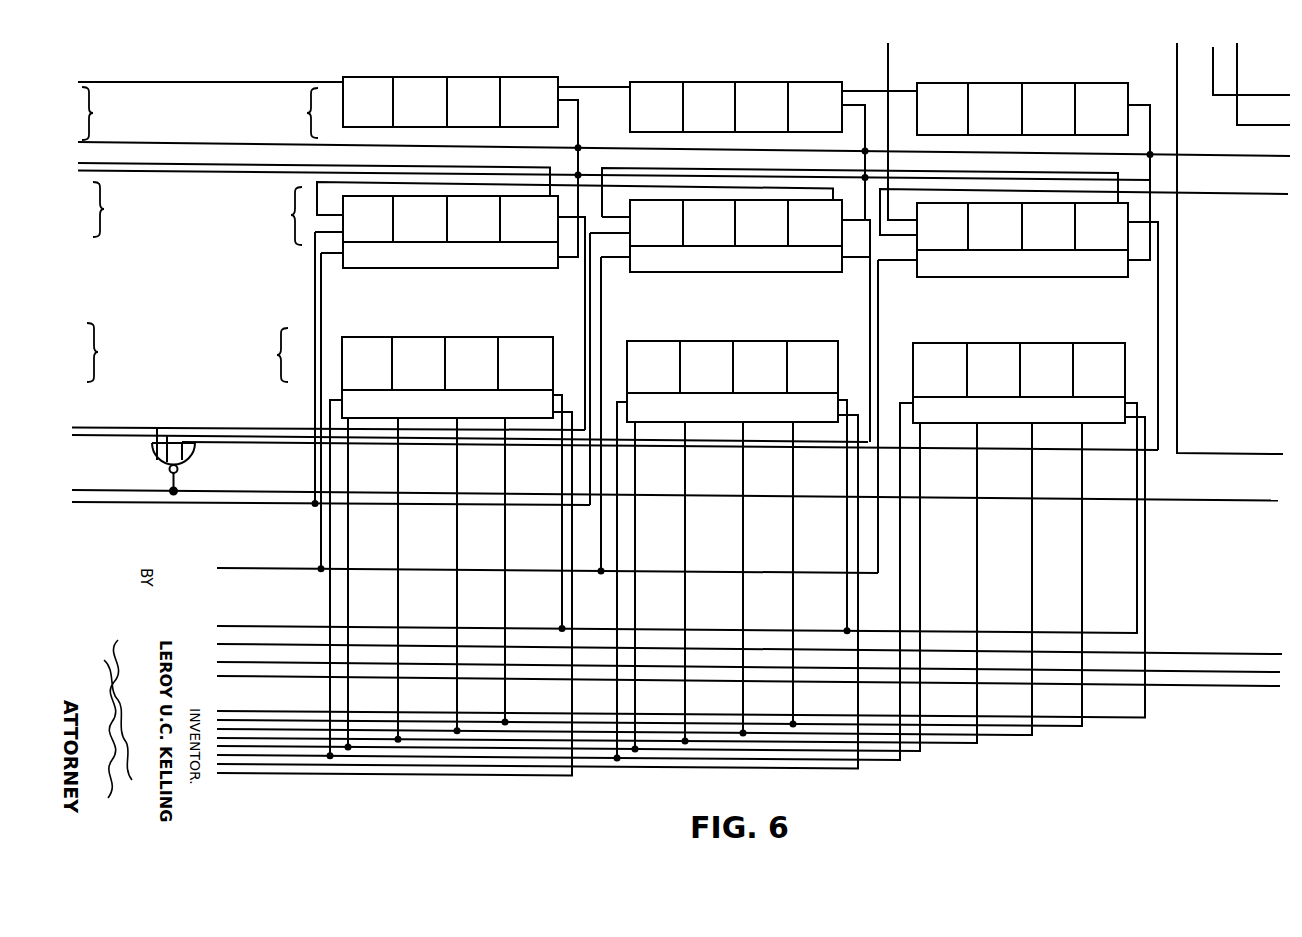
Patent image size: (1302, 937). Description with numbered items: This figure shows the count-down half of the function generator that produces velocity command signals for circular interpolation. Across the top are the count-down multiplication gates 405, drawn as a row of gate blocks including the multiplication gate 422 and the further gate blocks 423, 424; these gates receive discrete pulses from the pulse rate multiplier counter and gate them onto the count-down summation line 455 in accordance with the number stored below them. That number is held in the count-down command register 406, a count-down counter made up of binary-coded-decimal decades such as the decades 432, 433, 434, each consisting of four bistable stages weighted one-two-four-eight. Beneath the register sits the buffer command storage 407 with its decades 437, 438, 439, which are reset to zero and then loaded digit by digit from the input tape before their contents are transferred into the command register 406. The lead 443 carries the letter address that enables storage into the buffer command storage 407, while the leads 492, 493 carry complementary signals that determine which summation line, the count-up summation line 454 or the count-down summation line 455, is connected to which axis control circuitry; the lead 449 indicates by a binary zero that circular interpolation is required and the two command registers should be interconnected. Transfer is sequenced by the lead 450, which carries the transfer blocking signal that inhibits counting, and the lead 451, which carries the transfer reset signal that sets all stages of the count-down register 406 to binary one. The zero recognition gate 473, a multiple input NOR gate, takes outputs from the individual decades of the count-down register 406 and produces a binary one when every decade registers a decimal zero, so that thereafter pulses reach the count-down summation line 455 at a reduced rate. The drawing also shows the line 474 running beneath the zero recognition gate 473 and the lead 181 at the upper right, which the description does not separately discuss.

The count-down multiplication gates 405 is at (203, 141).
The count-down command register 406 is at (203, 256).
The buffer command storage 407 is at (243, 386).
The multiplication gate 422 is at (383, 77).
The count-down multiplication gate 423 is at (665, 81).
The count-down multiplication gate 424 is at (944, 83).
The decade 432 is at (384, 271).
The decade 433 is at (676, 274).
The decade 434 is at (945, 278).
The buffer storage decade 437 is at (537, 337).
The buffer storage decade 438 is at (821, 341).
The buffer storage decade 439 is at (1107, 343).
The lead 443 is at (293, 622).
The lead 449 is at (295, 677).
The lead 450 is at (146, 504).
The lead 451 is at (1174, 58).
The count-up summation line 454 is at (1214, 77).
The count-down summation line 455 is at (494, 151).
The zero recognition gate 473 is at (199, 452).
The line 474 is at (301, 489).
The lead 492 is at (289, 644).
The lead 493 is at (289, 663).
The line 181 is at (1290, 63).